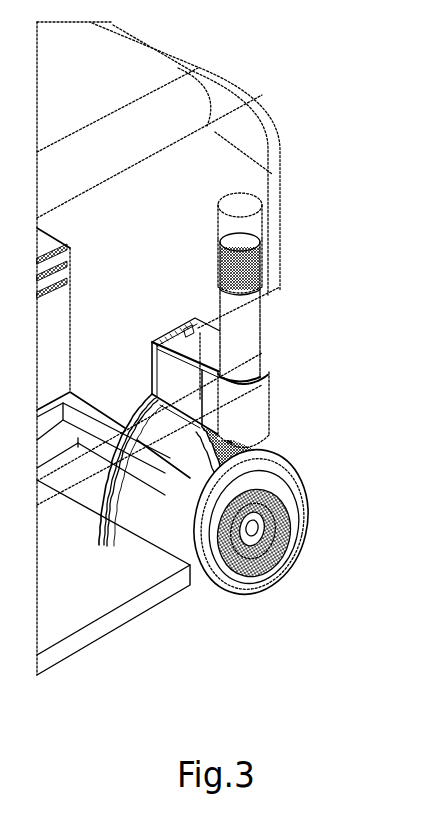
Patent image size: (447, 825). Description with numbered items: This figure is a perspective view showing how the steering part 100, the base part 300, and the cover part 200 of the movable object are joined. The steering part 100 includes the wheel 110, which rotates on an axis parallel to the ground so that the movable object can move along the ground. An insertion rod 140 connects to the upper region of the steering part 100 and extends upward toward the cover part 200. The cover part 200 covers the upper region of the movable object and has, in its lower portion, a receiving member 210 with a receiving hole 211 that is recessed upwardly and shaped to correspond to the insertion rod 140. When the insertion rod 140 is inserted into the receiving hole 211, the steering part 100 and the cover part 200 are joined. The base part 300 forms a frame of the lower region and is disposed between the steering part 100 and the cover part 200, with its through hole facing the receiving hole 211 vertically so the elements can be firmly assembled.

The steering part 100 is at (297, 572).
The wheel 110 is at (262, 530).
The insertion rod 140 is at (262, 268).
The cover part 200 is at (247, 87).
The receiving member 210 is at (270, 201).
The receiving hole 211 is at (254, 226).
The base part 300 is at (284, 398).